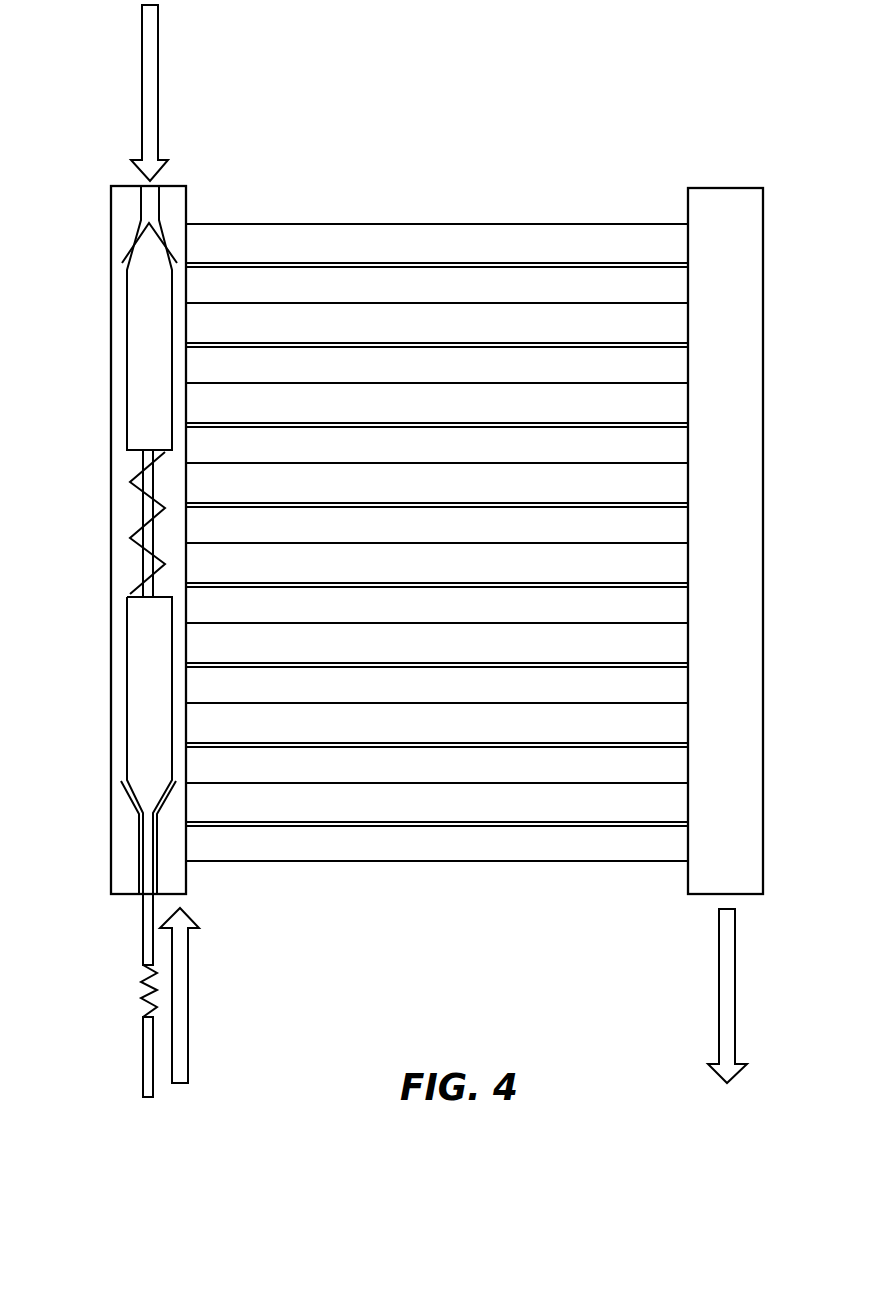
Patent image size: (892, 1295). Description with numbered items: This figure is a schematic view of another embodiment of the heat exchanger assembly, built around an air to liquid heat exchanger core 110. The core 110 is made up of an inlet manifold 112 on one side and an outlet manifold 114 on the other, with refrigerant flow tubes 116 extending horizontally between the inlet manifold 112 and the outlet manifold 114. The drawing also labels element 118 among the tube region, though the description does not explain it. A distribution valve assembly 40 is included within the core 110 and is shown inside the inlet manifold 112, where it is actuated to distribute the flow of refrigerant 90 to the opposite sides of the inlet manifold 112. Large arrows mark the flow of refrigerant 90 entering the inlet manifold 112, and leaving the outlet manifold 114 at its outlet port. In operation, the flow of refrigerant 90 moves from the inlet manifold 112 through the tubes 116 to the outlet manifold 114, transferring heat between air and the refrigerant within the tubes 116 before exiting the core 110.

The distribution valve assembly 40 is at (121, 350).
The flow of refrigerant 90 is at (158, 100).
The air to liquid heat exchanger core 110 is at (606, 150).
The inlet manifold 112 is at (111, 673).
The outlet manifold 114 is at (746, 363).
The refrigerant flow tubes 116 is at (311, 267).
The fins 118 is at (418, 287).